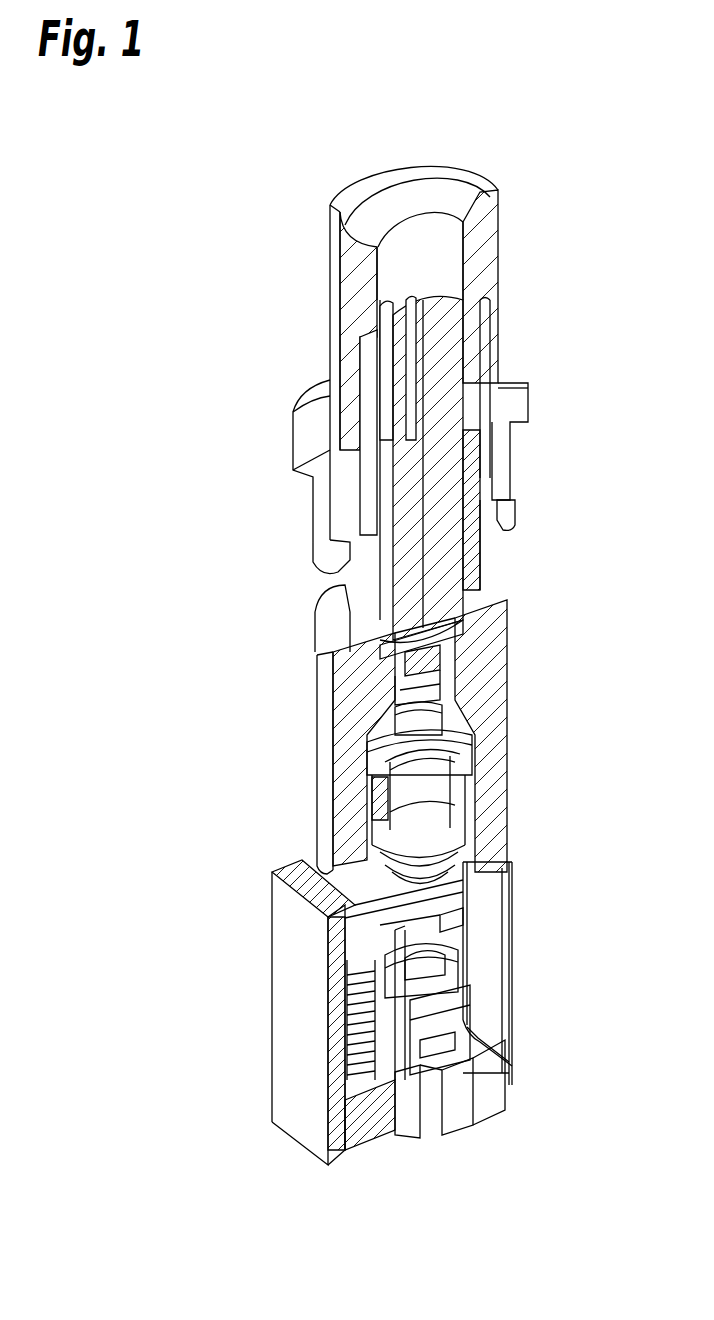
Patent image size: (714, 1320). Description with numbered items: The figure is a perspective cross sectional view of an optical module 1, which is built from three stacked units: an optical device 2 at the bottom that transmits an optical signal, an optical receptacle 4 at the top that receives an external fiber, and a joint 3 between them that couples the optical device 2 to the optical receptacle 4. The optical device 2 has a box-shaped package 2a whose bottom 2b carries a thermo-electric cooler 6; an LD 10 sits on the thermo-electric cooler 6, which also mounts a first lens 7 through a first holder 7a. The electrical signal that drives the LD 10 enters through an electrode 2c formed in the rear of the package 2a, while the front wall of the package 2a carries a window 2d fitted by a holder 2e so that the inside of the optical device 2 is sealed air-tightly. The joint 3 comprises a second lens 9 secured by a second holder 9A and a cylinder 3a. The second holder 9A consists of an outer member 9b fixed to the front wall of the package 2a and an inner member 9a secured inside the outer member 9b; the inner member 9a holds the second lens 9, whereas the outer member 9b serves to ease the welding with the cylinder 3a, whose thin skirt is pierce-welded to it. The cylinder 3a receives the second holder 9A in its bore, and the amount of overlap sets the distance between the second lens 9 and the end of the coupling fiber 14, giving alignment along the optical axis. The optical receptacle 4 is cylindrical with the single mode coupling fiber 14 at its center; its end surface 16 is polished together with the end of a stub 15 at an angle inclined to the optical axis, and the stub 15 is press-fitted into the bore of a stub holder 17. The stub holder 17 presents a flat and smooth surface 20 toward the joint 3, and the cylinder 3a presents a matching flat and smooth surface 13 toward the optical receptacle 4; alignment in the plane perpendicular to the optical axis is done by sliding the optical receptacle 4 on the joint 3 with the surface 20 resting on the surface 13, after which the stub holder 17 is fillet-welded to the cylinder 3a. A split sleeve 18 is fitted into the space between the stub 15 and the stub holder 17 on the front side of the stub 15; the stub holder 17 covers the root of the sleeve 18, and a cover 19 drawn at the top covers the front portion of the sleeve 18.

The optical module 1 is at (544, 195).
The optical device 2 is at (242, 866).
The package 2a is at (328, 860).
The bottom 2b is at (302, 1117).
The electrode 2c is at (458, 1118).
The window 2d is at (440, 922).
The holder 2e is at (493, 893).
The joint 3 is at (225, 655).
The cylinder 3a is at (322, 790).
The optical receptacle 4 is at (255, 650).
The thermo-electric cooler 6 is at (375, 1125).
The first lens 7 is at (430, 990).
The first holder 7a is at (470, 962).
The second lens 9 is at (433, 787).
The second holder 9A is at (572, 792).
The inner member 9a is at (468, 803).
The outer member 9b is at (488, 837).
The LD 10 is at (430, 1030).
The flat and smooth surface 13 is at (503, 597).
The coupling fiber 14 is at (490, 500).
The stub 15 is at (463, 620).
The end surface 16 is at (470, 653).
The stub holder 17 is at (475, 550).
The sleeve 18 is at (473, 463).
The outer housing 19 is at (487, 273).
The flat and smooth surface 20 is at (413, 627).